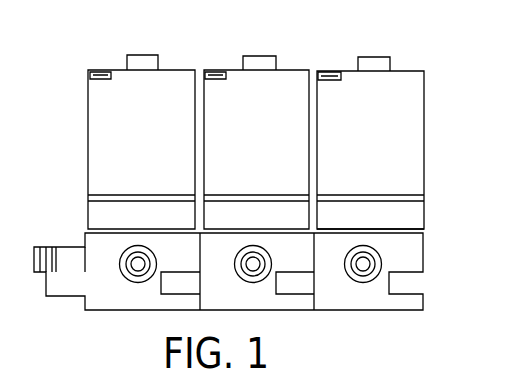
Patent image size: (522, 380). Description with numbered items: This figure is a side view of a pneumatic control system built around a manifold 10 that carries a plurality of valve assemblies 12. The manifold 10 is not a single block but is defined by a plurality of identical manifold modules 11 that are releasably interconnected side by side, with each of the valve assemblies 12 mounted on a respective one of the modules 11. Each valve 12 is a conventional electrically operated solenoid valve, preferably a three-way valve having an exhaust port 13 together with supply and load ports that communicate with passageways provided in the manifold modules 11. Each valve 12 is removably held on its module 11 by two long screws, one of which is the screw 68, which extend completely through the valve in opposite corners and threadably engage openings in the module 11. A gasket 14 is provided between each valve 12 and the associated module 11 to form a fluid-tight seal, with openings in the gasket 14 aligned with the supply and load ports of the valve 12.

The manifold 10 is at (337, 321).
The manifold module 11 is at (116, 316).
The valve assembly 12 is at (103, 115).
The exhaust port 13 is at (380, 65).
The gasket 14 is at (405, 228).
The long screw 68 is at (337, 77).